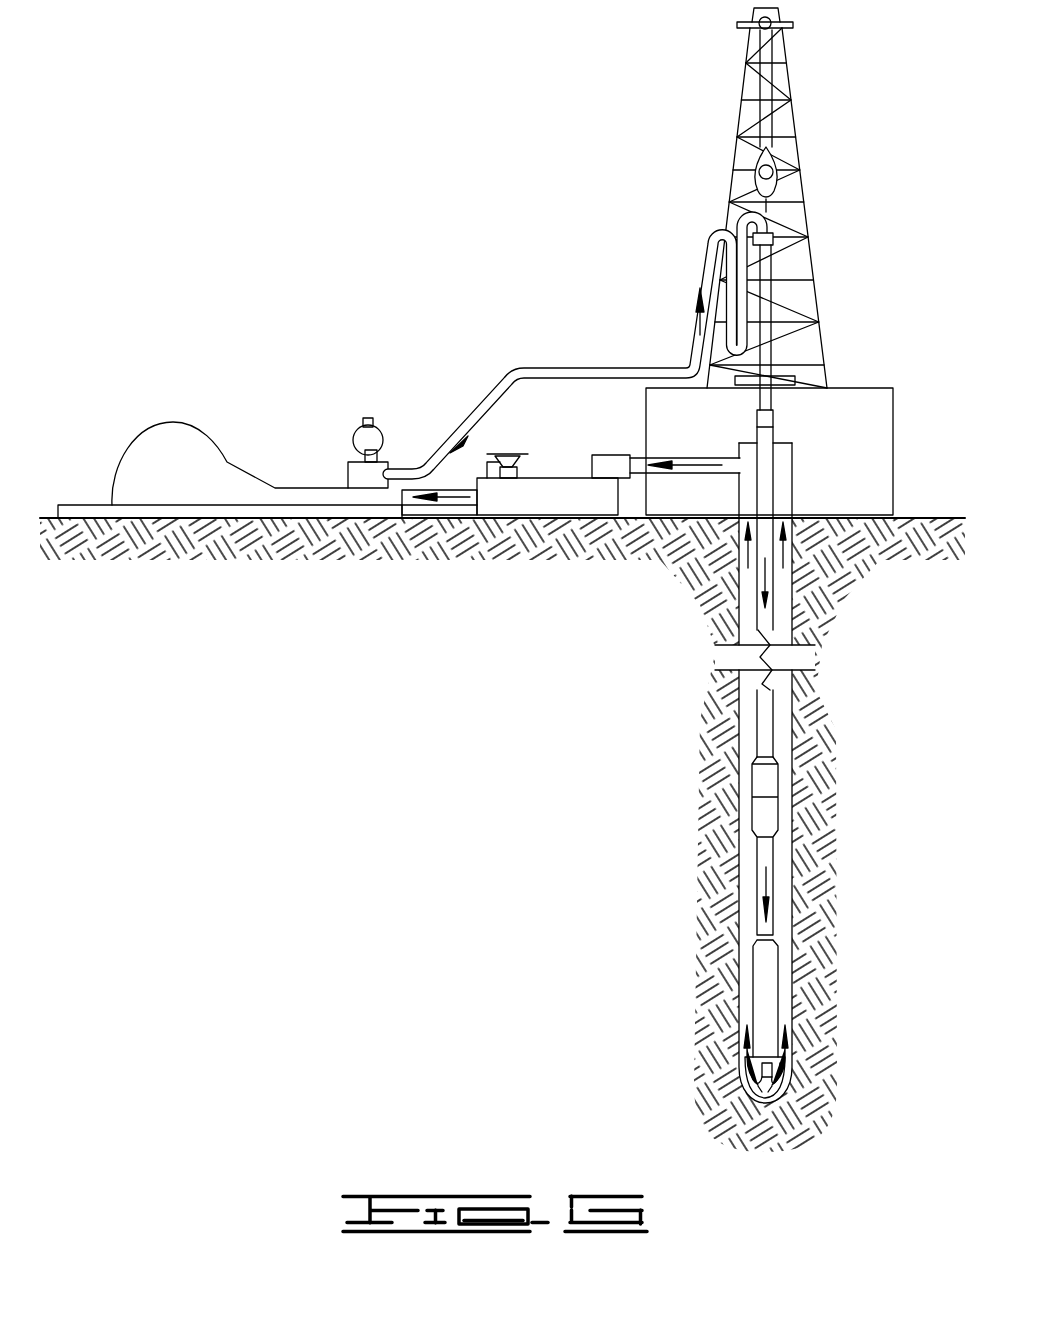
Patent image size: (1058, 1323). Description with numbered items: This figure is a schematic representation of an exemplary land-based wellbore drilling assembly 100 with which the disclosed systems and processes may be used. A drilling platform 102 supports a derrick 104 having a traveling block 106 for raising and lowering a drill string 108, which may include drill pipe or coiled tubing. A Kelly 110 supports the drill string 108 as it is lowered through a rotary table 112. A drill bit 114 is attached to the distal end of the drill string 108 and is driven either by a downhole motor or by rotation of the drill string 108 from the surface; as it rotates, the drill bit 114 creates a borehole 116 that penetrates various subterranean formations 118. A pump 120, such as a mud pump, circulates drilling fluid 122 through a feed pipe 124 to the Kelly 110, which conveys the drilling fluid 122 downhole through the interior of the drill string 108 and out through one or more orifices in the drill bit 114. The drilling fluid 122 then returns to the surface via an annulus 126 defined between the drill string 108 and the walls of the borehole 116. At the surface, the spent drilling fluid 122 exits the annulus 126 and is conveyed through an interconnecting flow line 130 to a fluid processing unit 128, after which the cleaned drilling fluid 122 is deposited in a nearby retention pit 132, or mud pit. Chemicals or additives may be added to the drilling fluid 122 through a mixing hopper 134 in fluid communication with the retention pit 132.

The wellbore drilling assembly 100 is at (477, 95).
The drilling platform 102 is at (895, 404).
The derrick 104 is at (794, 120).
The traveling block 106 is at (776, 164).
The drill string 108 is at (770, 630).
The Kelly 110 is at (767, 290).
The rotary table 112 is at (787, 377).
The drill bit 114 is at (788, 1088).
The borehole 116 is at (800, 738).
The subterranean formations 118 is at (588, 761).
The pump 120 is at (180, 484).
The drilling fluid 122 is at (413, 475).
The feed pipe 124 is at (580, 373).
The annulus 126 is at (786, 890).
The fluid processing unit 128 is at (614, 467).
The flow line 130 is at (720, 473).
The retention pit 132 is at (563, 502).
The mixing hopper 134 is at (508, 455).